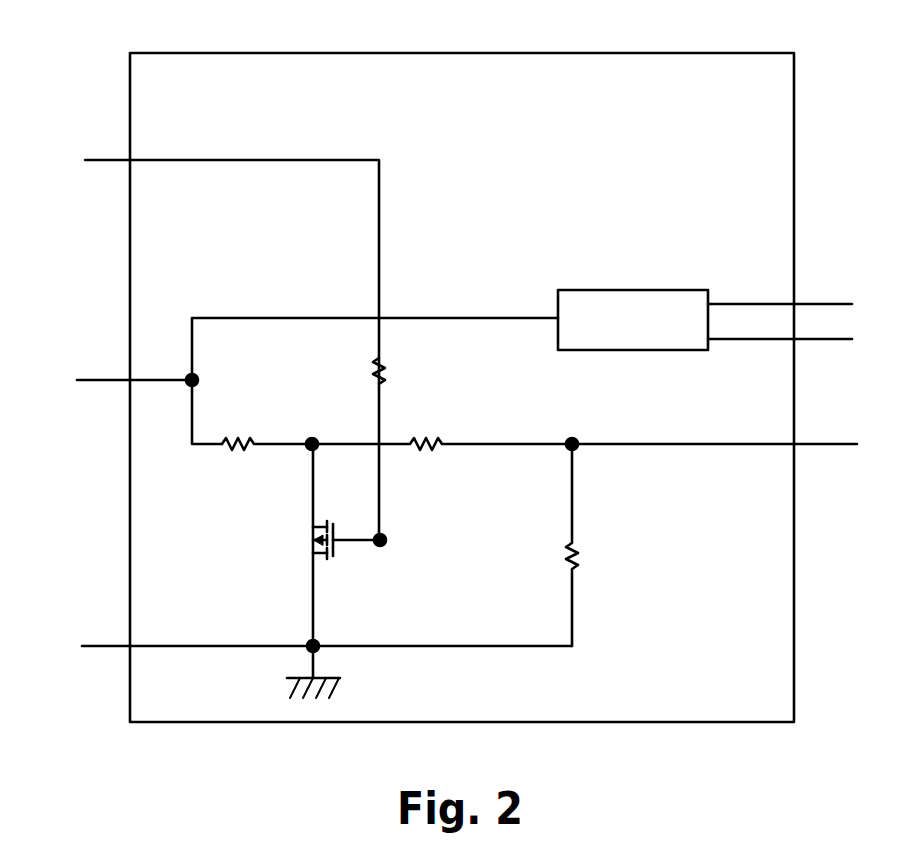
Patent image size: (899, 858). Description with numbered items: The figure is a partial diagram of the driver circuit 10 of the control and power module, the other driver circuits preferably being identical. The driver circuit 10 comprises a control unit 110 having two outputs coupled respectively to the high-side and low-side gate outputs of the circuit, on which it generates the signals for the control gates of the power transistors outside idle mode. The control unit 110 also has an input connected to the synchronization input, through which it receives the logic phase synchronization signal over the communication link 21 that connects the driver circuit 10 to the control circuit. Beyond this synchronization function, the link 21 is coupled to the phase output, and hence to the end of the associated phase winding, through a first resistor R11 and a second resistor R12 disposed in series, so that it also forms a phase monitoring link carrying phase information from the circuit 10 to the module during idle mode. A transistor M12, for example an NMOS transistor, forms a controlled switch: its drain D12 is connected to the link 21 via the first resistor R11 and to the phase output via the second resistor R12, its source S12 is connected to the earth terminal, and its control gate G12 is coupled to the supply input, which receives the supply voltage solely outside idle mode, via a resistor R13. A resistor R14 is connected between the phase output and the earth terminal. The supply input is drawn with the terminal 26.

The driver circuit 10 is at (556, 53).
The supply voltage terminal ALG 26 is at (107, 159).
The communication link 21 is at (106, 378).
The control unit 110 is at (620, 350).
The first resistor R11 is at (262, 462).
The second resistor R12 is at (584, 427).
The resistor R13 is at (412, 374).
The resistor R14 is at (604, 542).
The transistor M12 is at (288, 545).
The drain D12 is at (309, 438).
The control gate G12 is at (386, 543).
The source S12 is at (318, 640).